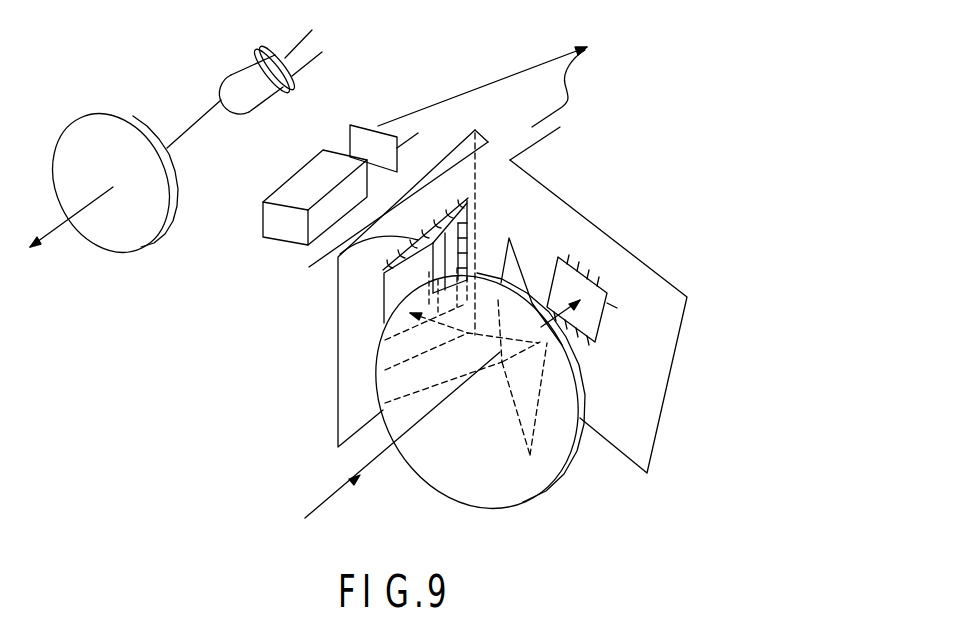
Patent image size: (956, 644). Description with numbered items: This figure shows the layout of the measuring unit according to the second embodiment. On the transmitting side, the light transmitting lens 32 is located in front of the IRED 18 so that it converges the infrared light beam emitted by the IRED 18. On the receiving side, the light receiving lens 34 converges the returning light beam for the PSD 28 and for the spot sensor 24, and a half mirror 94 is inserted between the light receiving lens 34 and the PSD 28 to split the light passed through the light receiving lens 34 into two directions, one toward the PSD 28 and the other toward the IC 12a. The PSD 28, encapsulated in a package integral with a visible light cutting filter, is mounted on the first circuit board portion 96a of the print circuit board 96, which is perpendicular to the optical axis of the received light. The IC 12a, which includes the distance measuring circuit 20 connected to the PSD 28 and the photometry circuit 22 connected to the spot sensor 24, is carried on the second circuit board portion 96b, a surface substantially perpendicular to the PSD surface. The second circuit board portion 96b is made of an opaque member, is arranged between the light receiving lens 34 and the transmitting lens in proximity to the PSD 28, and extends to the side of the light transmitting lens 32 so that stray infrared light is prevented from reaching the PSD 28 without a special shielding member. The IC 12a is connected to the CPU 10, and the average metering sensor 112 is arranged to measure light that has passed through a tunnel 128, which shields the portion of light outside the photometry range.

The CPU 10 is at (728, 43).
The IC 12a is at (330, 252).
The IRED 18 is at (237, 74).
The distance measuring circuit 20 is at (478, 198).
The photometry circuit 22 is at (445, 228).
The spot sensor 24 is at (383, 300).
The PSD 28 is at (608, 307).
The light transmitting lens 32 is at (110, 243).
The light receiving lens 34 is at (537, 497).
The half mirror 94 is at (515, 250).
The print circuit board 96 is at (675, 374).
The first circuit board portion 96a is at (655, 441).
The second circuit board portion 96b is at (338, 333).
The average metering sensor 112 is at (358, 123).
The tunnel 128 is at (280, 186).